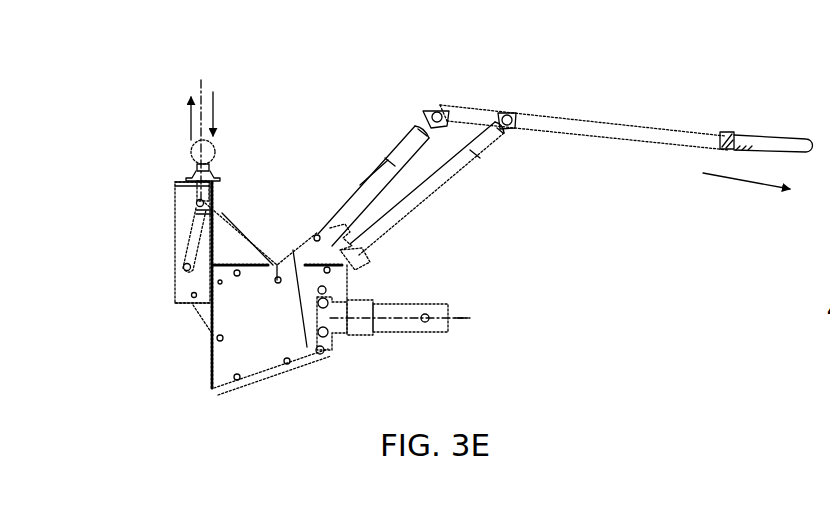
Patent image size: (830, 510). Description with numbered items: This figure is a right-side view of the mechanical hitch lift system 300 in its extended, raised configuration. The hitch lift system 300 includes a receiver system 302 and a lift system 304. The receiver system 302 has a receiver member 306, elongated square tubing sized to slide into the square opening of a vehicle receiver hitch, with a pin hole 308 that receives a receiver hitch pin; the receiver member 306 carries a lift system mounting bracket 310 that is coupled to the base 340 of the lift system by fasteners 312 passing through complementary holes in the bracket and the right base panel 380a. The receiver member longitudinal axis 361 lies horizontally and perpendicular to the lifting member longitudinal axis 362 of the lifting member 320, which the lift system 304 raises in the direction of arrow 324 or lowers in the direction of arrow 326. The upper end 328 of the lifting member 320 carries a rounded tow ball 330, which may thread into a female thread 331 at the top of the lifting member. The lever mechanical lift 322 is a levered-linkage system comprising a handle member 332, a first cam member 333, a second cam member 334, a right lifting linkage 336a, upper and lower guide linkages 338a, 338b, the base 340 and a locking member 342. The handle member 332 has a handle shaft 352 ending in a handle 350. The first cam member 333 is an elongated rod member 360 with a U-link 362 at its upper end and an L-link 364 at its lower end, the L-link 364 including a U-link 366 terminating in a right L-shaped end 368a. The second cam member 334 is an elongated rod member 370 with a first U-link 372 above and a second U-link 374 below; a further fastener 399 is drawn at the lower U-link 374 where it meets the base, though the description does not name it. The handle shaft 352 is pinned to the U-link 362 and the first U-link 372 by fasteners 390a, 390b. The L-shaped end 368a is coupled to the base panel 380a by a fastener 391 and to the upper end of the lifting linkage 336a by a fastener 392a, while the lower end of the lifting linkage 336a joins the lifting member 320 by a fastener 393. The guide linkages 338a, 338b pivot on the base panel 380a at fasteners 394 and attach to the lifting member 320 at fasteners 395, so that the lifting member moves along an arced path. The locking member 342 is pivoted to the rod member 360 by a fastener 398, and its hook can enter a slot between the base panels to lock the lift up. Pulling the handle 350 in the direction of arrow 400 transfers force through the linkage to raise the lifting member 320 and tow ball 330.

The hitch lift system 300 is at (722, 103).
The receiver system 302 is at (438, 340).
The lift system 304 is at (273, 63).
The receiver member 306 is at (402, 338).
The pin hole 308 is at (425, 313).
The lift system mounting bracket 310 is at (363, 310).
The fasteners 312 is at (328, 342).
The lifting member 320 is at (177, 307).
The lever mechanical lift 322 is at (370, 105).
The arrow 324 is at (190, 121).
The arrow 326 is at (218, 108).
The upper end 328 is at (220, 137).
The tow ball 330 is at (218, 152).
The female thread 331 is at (187, 183).
The handle member 332 is at (755, 125).
The first cam member 333 is at (388, 150).
The second cam member 334 is at (473, 170).
The right lifting linkage 336a is at (188, 240).
The upper guide linkage 338a is at (214, 257).
The lower guide linkage 338b is at (203, 323).
The base 340 is at (270, 382).
The locking member 342 is at (350, 235).
The handle 350 is at (757, 145).
The handle shaft 352 is at (590, 140).
The elongated rod member 360 is at (372, 170).
The receiver member longitudinal axis 361 is at (470, 312).
The U-link 362 is at (197, 85).
The L-link 364 is at (294, 252).
The U-link 366 is at (305, 343).
The right L-shaped end 368a is at (207, 215).
The elongated rod member 370 is at (438, 197).
The first U-link 372 is at (500, 135).
The second U-link 374 is at (357, 255).
The right base panel 380a is at (223, 367).
The fastener 390a is at (435, 110).
The fastener 390b is at (502, 115).
The fastener 391 is at (280, 285).
The fastener 392a is at (198, 204).
The fastener 393 is at (182, 266).
The fasteners 394 is at (221, 279).
The fasteners 395 is at (191, 295).
The fastener 398 is at (318, 236).
The pin 399 is at (330, 270).
The arrow 400 is at (732, 188).